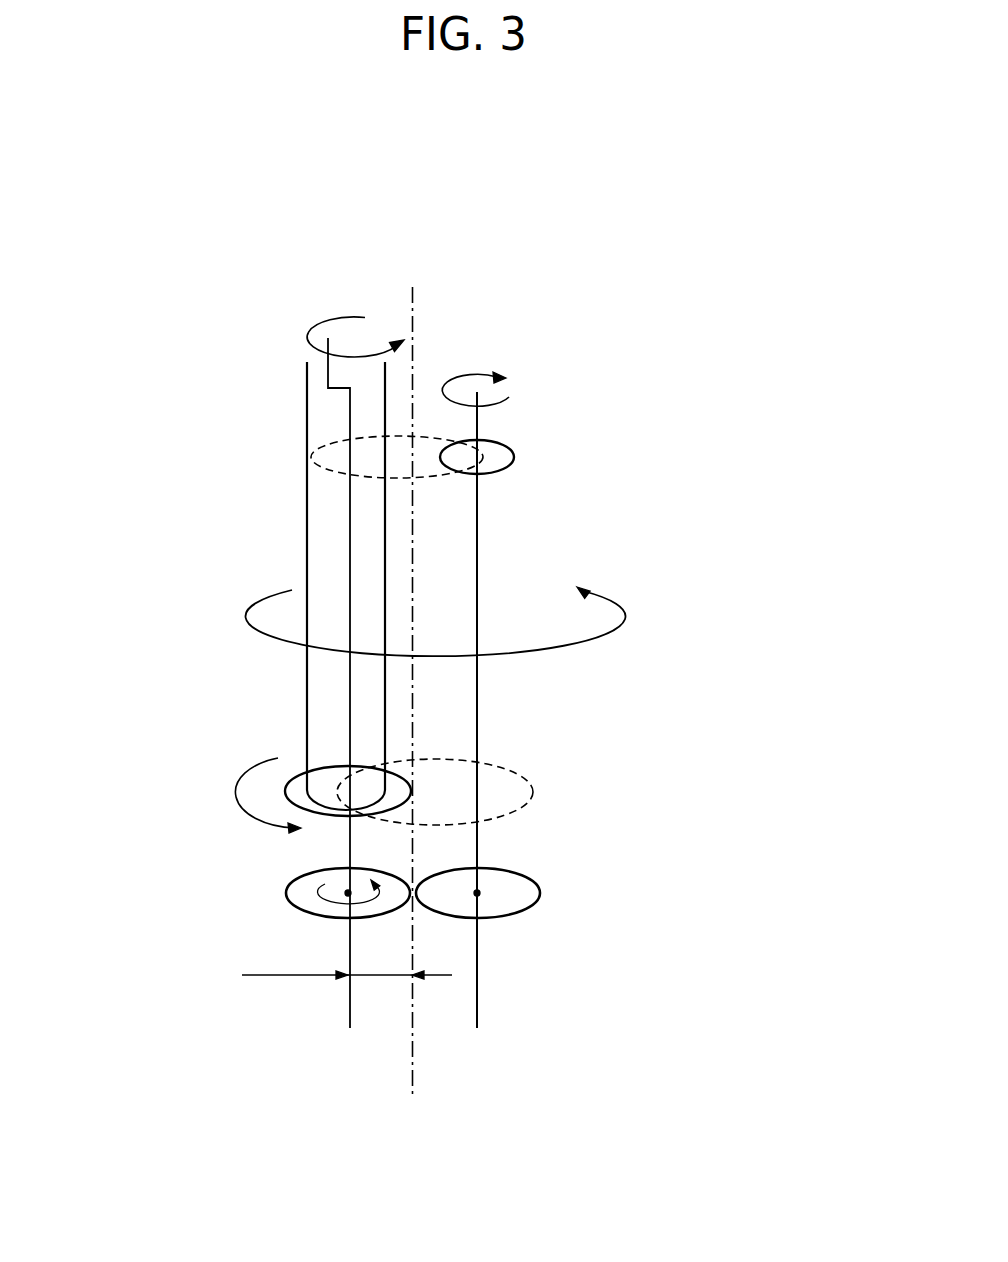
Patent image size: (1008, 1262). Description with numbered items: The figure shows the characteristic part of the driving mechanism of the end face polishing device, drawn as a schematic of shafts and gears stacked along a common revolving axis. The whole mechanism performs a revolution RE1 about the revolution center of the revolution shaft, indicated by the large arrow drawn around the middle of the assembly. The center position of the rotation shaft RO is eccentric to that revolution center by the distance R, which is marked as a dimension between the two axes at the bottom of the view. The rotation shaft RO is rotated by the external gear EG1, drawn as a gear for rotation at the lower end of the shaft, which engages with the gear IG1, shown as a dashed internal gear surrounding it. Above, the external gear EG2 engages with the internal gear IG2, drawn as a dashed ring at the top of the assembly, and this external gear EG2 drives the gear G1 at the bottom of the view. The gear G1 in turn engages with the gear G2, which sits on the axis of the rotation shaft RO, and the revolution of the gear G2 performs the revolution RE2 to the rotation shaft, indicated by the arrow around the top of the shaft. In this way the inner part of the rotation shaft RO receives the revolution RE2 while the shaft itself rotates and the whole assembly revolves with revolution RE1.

The revolution to rotation shaft RE2 is at (360, 356).
The internal gear IG2 is at (312, 458).
The external gear EG2 is at (512, 460).
The revolution RE1 is at (614, 600).
The rotation shaft RO is at (307, 692).
The external gear for rotation EG1 is at (508, 768).
The internal gear IG1 is at (530, 805).
The second gear G2 is at (285, 892).
The first gear G1 is at (530, 910).
The eccentricity R is at (347, 959).